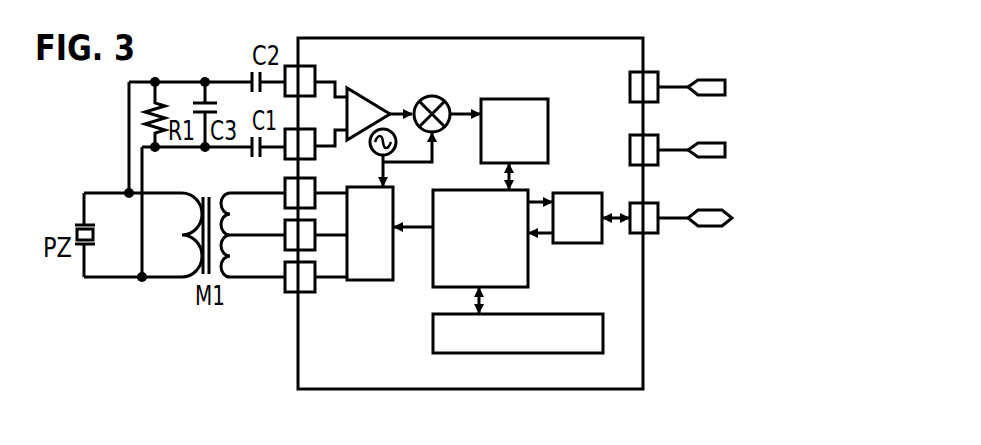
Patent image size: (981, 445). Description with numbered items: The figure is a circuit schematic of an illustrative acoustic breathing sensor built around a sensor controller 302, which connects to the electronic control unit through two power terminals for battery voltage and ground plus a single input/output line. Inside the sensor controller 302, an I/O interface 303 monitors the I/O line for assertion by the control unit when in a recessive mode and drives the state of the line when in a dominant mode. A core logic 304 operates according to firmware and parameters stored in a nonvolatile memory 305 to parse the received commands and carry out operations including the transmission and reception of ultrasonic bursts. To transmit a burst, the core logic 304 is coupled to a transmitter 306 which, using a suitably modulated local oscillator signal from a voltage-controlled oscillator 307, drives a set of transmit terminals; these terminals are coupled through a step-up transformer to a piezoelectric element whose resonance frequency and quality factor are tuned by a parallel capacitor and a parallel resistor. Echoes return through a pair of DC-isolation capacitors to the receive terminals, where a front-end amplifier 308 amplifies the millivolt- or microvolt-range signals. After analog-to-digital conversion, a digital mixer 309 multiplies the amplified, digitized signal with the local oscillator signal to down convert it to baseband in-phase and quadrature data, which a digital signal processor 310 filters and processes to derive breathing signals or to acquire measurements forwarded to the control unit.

The sensor controller 302 is at (597, 38).
The I/O interface 303 is at (586, 243).
The core logic 304 is at (529, 256).
The nonvolatile memory 305 is at (557, 353).
The transmitter 306 is at (357, 280).
The voltage-controlled oscillator 307 is at (375, 153).
The front-end amplifier 308 is at (356, 94).
The digital mixer 309 is at (423, 96).
The digital signal processor 310 is at (501, 99).